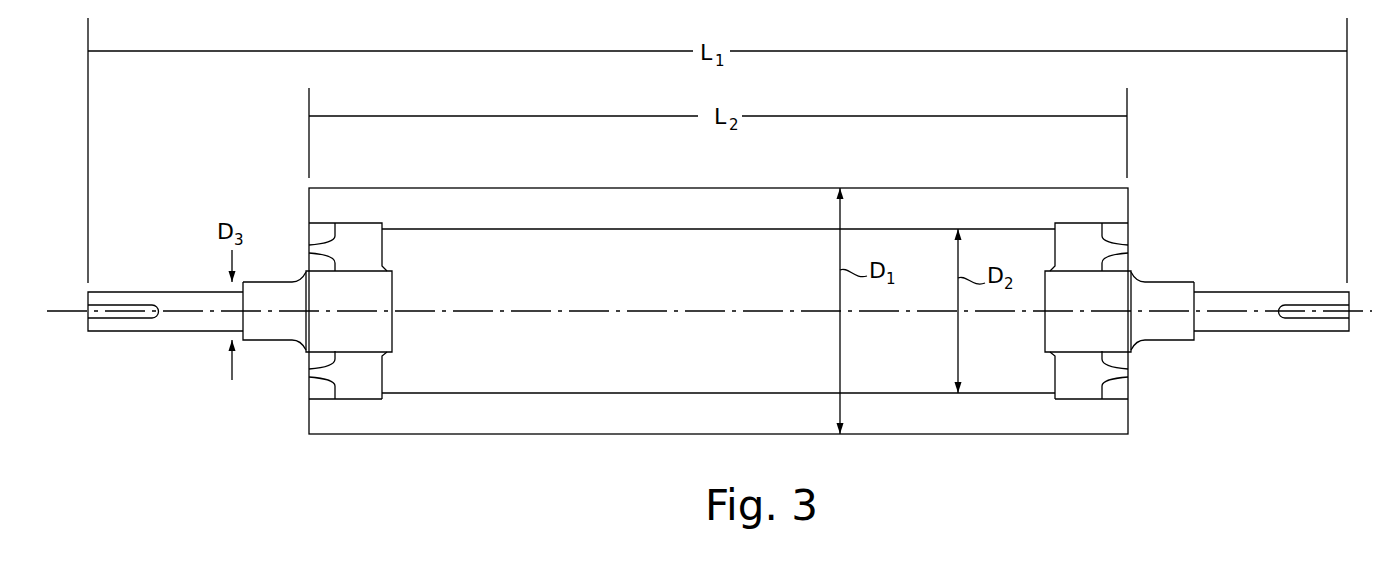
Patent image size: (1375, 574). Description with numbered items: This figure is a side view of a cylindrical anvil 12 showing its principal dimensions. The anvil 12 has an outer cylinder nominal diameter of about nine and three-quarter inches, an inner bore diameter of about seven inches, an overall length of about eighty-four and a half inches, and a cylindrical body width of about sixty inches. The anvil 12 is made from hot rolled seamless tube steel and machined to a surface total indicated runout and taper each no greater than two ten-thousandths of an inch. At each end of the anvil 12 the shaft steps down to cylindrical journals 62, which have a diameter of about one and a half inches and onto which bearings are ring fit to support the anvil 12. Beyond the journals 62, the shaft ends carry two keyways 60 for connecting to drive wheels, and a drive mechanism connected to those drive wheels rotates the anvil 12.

The anvil 12 is at (664, 456).
The keyways 60 is at (120, 308).
The cylindrical journals 62 is at (282, 338).